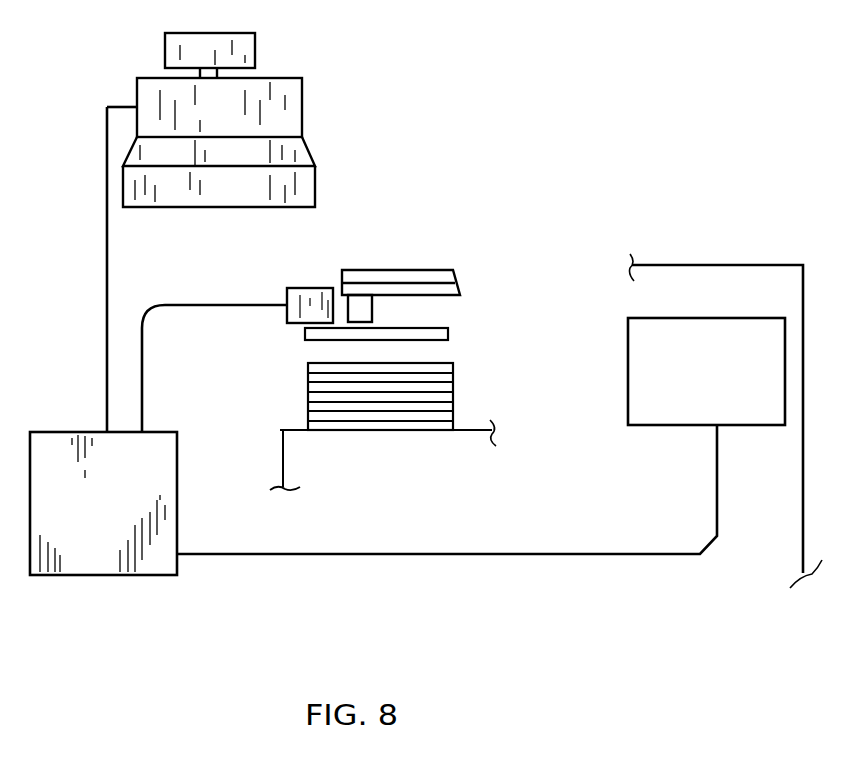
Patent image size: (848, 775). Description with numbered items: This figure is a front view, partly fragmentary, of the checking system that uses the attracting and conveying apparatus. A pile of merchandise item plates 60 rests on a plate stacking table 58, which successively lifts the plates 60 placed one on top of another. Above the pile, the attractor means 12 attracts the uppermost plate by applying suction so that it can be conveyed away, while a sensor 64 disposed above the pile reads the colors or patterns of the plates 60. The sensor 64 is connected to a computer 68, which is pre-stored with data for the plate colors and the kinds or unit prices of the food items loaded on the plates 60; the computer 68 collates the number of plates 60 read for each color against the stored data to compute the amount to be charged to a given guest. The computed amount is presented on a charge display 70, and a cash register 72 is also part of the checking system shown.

The cash register 72 is at (303, 103).
The sensor 64 is at (310, 288).
The attractor means 12 is at (372, 307).
The plates 60 is at (363, 340).
The plate stacking table 58 is at (283, 430).
The computer 68 is at (68, 432).
The charge display 70 is at (675, 425).